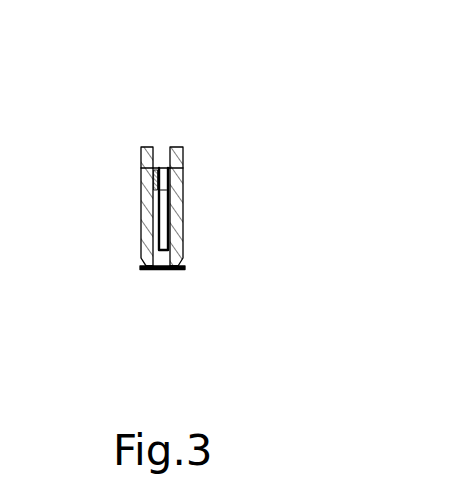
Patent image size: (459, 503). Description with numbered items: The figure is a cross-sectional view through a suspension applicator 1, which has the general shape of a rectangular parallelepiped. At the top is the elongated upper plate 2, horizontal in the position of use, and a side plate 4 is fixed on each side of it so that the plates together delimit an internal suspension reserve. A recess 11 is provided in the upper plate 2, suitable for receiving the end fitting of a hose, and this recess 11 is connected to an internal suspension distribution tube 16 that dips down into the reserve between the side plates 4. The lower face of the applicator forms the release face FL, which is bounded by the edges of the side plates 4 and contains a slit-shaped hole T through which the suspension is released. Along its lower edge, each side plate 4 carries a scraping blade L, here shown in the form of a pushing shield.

The suspension applicator 1 is at (228, 178).
The upper plate 2 is at (178, 147).
The recess 11 is at (167, 147).
The side plate 4 is at (140, 205).
The internal suspension distribution tube 16 is at (183, 232).
The scraping blade L is at (141, 267).
The release face FL is at (151, 271).
The slit-shaped hole T is at (162, 272).